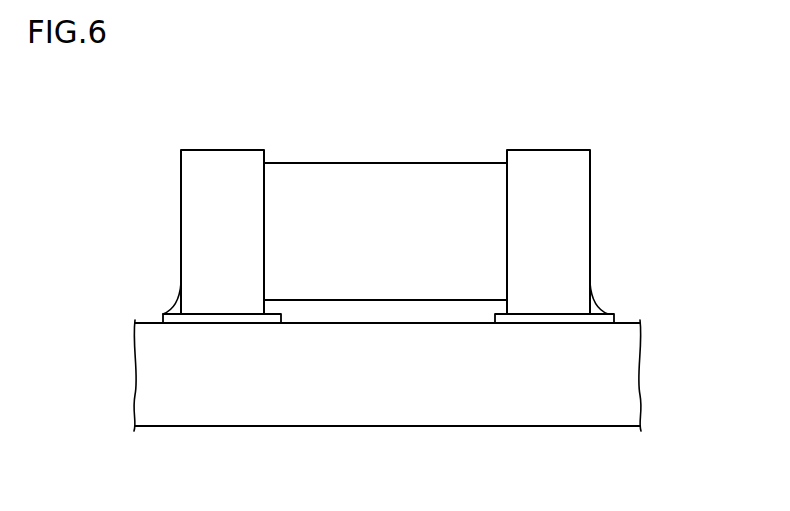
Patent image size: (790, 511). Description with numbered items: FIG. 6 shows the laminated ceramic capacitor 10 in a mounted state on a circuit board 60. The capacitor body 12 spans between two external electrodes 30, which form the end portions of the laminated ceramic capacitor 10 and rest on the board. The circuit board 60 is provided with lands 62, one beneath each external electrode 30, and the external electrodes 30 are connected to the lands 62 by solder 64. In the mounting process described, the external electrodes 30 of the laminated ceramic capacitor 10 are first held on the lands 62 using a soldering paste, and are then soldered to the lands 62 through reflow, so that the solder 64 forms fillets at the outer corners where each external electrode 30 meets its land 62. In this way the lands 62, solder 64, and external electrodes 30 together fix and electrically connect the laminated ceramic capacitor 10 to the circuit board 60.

The laminated ceramic capacitor 10 is at (382, 126).
The semiconductor chip / beam 12 is at (453, 180).
The external electrodes 30 is at (226, 163).
The circuit board 60 is at (617, 380).
The lands 62 is at (197, 323).
The solder 64 is at (176, 308).